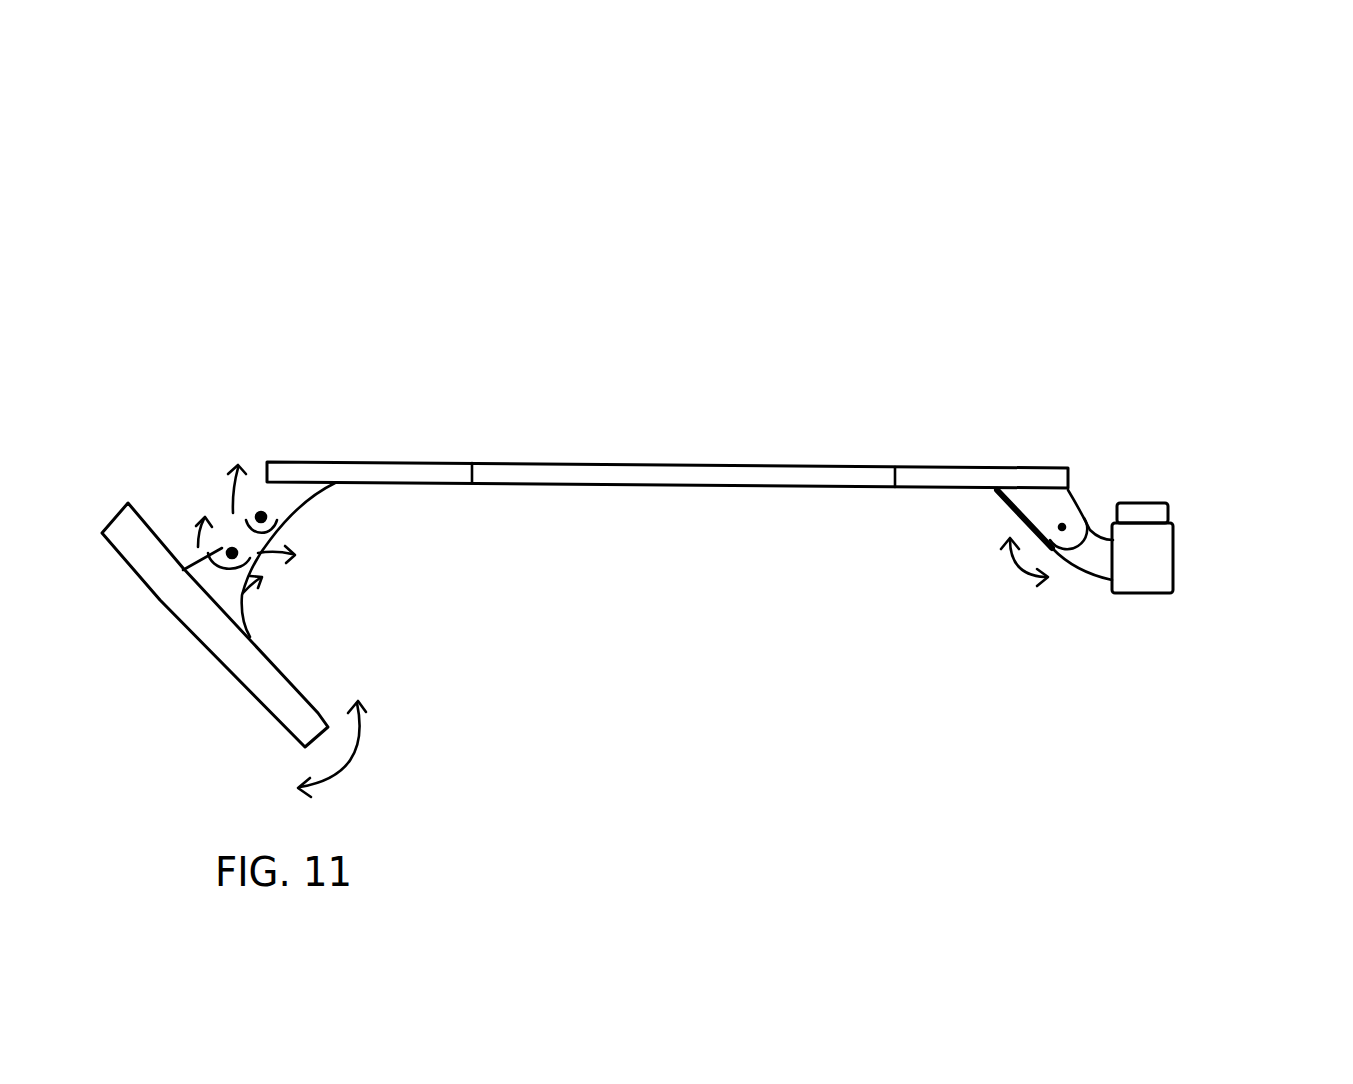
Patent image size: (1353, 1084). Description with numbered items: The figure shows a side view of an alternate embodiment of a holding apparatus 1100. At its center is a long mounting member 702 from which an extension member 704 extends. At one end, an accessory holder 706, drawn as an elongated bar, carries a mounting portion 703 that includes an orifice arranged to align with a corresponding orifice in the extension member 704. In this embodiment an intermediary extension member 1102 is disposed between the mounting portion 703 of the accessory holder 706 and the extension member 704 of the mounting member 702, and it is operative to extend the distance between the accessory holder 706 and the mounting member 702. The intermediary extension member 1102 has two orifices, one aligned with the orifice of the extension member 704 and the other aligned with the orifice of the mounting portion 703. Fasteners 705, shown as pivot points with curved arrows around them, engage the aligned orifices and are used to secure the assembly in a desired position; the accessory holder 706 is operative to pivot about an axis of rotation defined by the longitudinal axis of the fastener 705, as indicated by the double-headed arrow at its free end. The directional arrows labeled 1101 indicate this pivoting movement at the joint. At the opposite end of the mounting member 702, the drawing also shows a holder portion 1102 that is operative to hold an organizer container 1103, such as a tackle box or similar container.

The holding apparatus 1100 is at (1110, 188).
The mounting member 702 is at (723, 468).
The mounting portion 703 is at (235, 597).
The extension member 704 is at (298, 505).
The fastener 705 is at (232, 550).
The accessory holder 706 is at (309, 723).
The rotation direction 1101 is at (258, 556).
The intermediary extension member 1102 is at (1167, 578).
The organizer container 1103 is at (1162, 503).